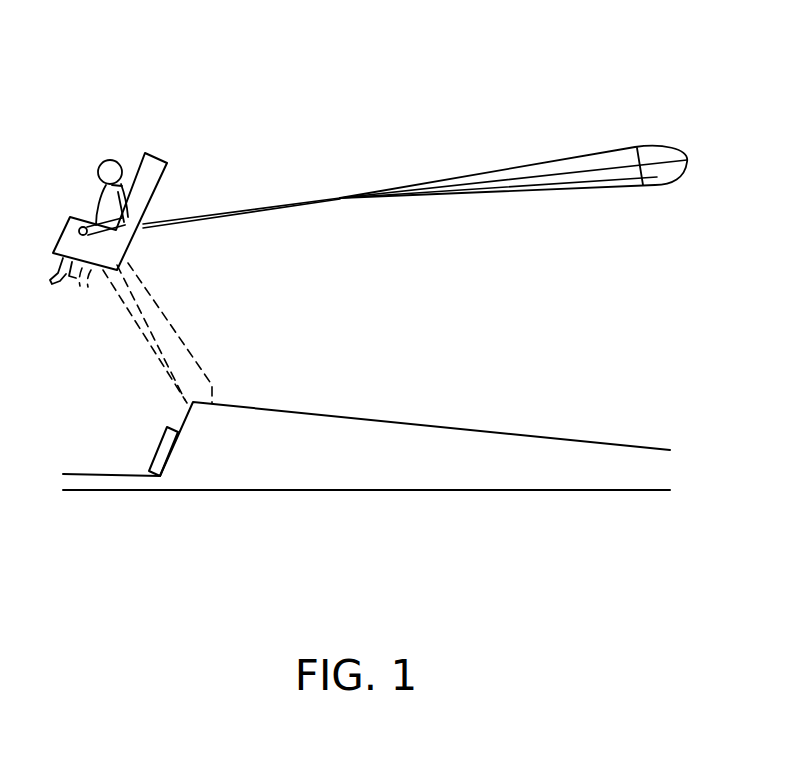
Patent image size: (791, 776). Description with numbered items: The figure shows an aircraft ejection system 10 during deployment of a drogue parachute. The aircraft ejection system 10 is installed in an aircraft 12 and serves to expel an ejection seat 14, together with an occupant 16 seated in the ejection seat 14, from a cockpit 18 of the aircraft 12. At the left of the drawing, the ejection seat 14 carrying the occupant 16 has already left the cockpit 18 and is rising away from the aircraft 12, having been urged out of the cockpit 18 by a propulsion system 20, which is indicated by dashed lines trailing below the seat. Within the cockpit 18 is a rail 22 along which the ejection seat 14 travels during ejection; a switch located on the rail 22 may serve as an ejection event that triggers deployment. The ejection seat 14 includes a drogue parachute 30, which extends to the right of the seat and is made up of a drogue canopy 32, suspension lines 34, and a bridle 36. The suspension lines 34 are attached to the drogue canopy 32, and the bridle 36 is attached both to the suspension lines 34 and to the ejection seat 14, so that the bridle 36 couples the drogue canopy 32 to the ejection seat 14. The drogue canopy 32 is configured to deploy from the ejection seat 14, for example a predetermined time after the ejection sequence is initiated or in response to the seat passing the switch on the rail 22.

The aircraft ejection system 10 is at (112, 93).
The aircraft 12 is at (356, 480).
The ejection seat 14 is at (158, 158).
The occupant 16 is at (103, 173).
The cockpit 18 is at (77, 448).
The propulsion system 20 is at (167, 328).
The rail 22 is at (158, 460).
The drogue parachute 30 is at (450, 128).
The drogue canopy 32 is at (667, 185).
The suspension lines 34 is at (517, 193).
The bridle 36 is at (238, 213).